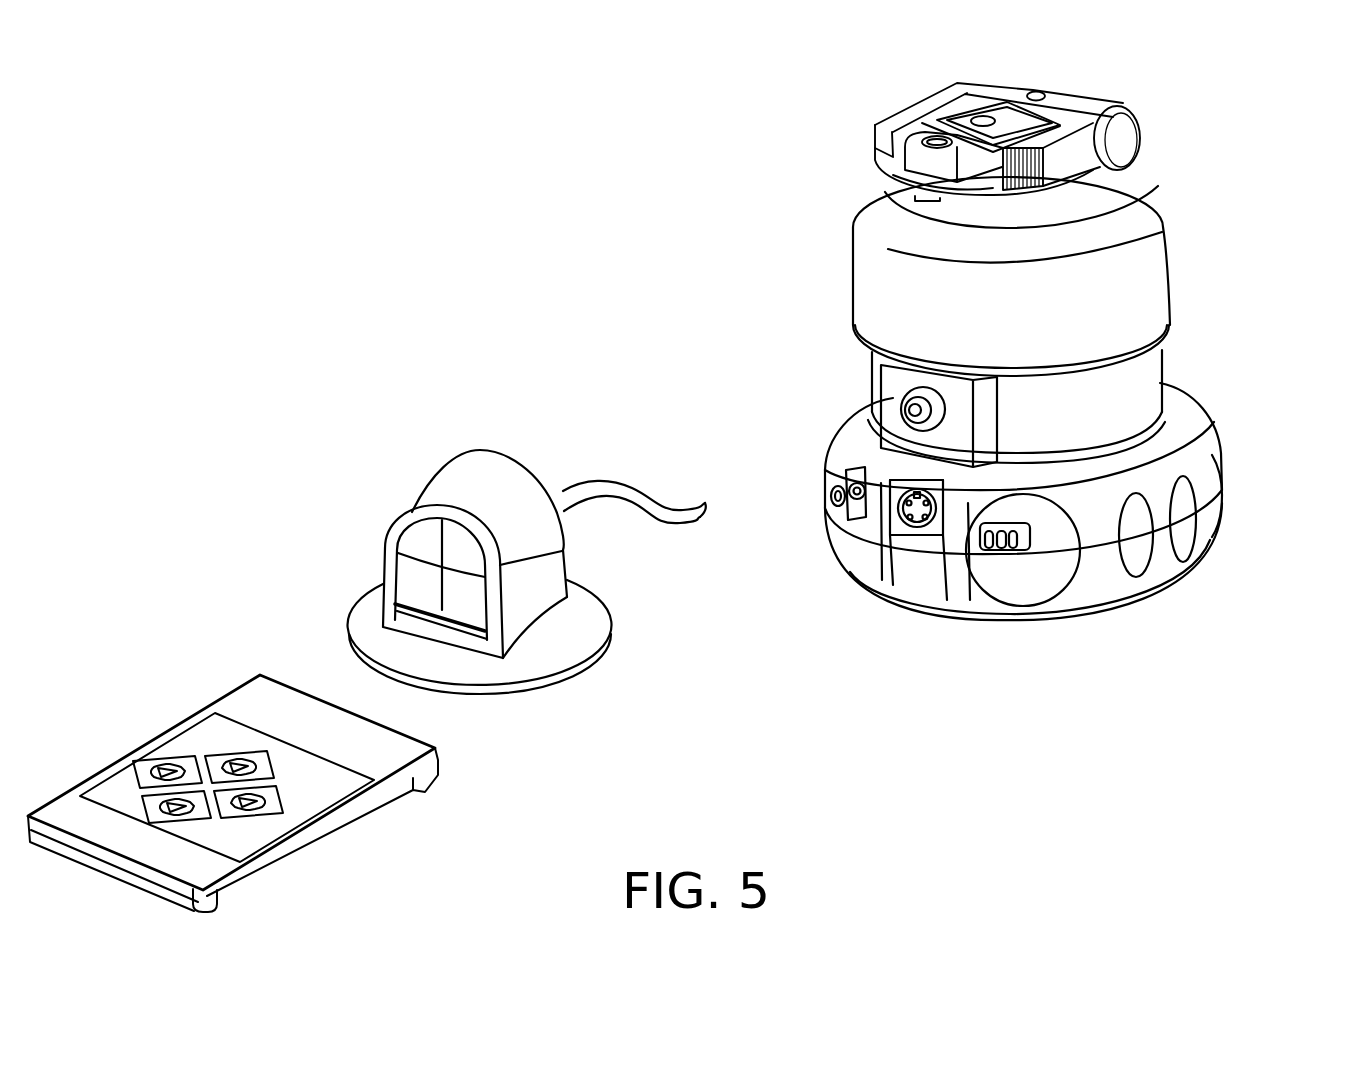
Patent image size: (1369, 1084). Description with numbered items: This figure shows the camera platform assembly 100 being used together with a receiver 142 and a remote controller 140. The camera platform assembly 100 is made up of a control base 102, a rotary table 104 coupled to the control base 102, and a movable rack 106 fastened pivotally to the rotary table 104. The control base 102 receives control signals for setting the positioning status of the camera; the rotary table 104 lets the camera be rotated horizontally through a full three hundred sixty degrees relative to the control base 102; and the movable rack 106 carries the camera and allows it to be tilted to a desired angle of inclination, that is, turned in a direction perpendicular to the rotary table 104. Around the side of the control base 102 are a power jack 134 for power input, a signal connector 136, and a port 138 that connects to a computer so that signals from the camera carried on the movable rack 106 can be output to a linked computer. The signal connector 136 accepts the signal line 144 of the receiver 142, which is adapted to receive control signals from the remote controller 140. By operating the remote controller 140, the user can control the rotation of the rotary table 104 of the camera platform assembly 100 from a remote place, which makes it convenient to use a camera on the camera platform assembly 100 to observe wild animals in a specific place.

The camera platform assembly 100 is at (1275, 688).
The control base 102 is at (1067, 536).
The rotary table 104 is at (1173, 275).
The movable rack 106 is at (1130, 142).
The power jack 134 is at (857, 505).
The signal connector 136 is at (910, 535).
The port 138 is at (914, 410).
The remote controller 140 is at (440, 772).
The receiver 142 is at (580, 673).
The signal line 144 is at (826, 498).